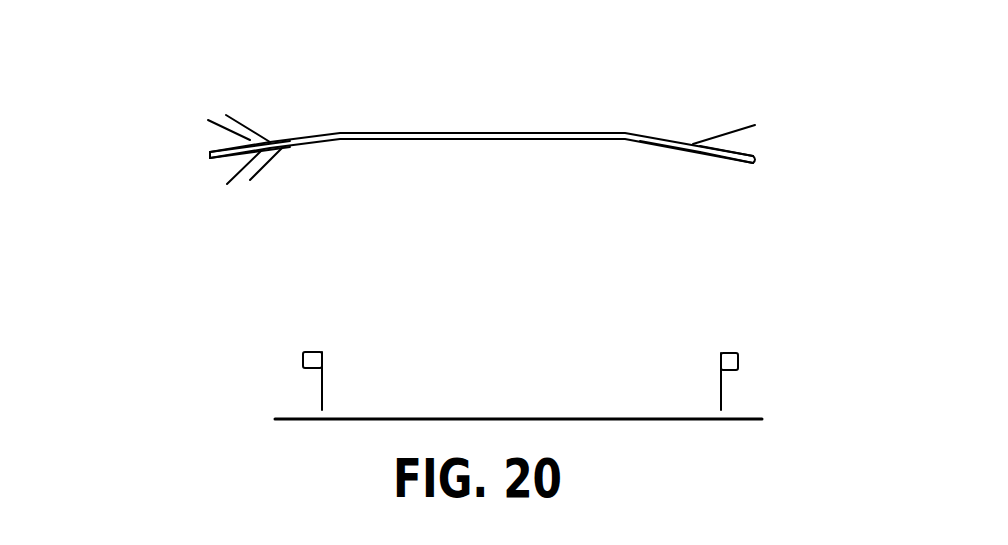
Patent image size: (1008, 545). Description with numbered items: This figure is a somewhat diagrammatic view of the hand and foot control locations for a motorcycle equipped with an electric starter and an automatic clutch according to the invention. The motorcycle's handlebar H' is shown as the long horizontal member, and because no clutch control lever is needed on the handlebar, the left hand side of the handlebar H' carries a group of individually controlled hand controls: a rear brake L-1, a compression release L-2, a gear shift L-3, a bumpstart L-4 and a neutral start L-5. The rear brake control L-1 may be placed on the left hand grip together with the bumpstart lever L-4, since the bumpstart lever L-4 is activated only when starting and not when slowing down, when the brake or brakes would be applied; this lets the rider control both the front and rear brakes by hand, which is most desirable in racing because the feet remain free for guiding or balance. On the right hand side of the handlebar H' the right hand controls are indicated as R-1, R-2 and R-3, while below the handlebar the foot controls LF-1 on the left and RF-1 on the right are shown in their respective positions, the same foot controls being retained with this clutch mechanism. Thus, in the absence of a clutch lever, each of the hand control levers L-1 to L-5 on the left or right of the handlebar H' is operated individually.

The handlebar H' is at (482, 100).
The rear brake L-1 is at (223, 124).
The compression release L-2 is at (236, 132).
The gear shift L-3 is at (242, 172).
The bumpstart lever L-4 is at (256, 162).
The neutral start L-5 is at (273, 155).
The right layer 1 R-1 is at (725, 133).
The right layer 2 R-2 is at (757, 158).
The right layer 3 R-3 is at (660, 146).
The left flag marker LF-1 is at (320, 388).
The right flag marker RF-1 is at (722, 393).